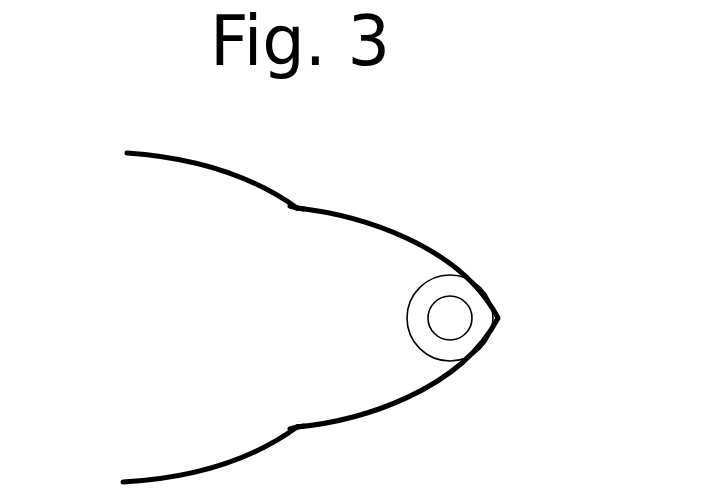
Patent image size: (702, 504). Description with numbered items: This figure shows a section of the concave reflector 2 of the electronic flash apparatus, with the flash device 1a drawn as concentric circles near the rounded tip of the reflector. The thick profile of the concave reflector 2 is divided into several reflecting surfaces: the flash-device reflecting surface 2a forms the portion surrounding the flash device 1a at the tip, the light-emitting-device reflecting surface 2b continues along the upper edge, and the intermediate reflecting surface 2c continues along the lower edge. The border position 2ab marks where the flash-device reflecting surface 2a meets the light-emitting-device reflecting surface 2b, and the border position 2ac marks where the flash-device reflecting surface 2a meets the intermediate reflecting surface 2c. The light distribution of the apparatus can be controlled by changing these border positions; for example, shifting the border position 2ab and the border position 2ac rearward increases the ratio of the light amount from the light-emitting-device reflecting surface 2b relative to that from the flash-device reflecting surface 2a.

The concave reflector 2 is at (311, 305).
The flash-device reflecting surface 2a is at (400, 238).
The light-emitting-device reflecting surface 2b is at (232, 176).
The intermediate reflecting surface 2c is at (233, 459).
The border position 2ab is at (296, 213).
The border position 2ac is at (293, 422).
The flash device 1a is at (448, 318).